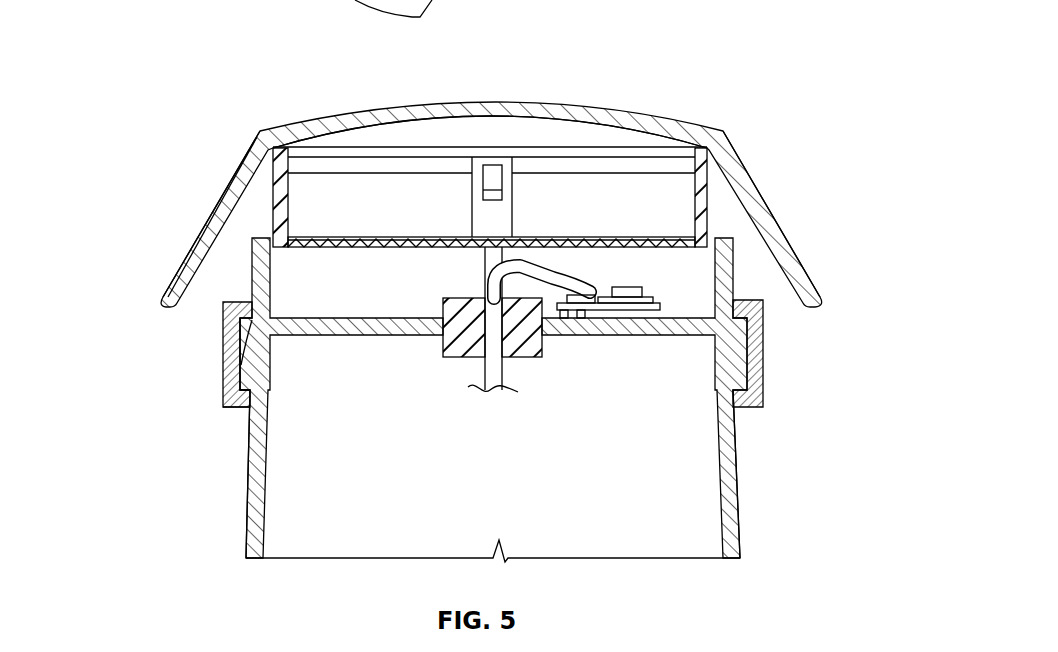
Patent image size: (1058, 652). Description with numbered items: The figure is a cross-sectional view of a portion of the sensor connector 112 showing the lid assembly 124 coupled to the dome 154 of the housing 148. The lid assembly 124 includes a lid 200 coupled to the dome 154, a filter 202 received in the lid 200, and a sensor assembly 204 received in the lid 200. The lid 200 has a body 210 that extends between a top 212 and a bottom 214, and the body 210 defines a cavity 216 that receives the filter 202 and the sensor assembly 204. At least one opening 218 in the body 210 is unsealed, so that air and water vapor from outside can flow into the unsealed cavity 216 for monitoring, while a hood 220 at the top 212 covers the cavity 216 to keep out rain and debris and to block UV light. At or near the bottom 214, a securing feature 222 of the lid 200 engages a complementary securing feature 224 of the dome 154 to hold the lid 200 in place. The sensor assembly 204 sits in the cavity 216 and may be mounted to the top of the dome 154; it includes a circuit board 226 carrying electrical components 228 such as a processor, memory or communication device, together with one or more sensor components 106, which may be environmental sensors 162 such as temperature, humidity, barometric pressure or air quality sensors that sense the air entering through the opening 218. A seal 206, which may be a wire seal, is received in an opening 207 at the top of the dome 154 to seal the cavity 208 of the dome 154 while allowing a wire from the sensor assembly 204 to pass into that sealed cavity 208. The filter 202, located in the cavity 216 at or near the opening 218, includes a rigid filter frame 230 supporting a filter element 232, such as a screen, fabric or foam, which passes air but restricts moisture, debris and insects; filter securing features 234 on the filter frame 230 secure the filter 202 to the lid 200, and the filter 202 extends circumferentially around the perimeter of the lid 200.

The sensor connector 112 is at (127, 180).
The filter 202 is at (272, 160).
The hood 220 is at (204, 237).
The cavity 216 is at (311, 282).
The opening 218 is at (211, 292).
The body 210 is at (228, 341).
The complementary securing feature 224 is at (252, 375).
The bottom 214 is at (234, 405).
The securing feature 222 is at (252, 397).
The housing 148 is at (223, 498).
The opening 207 is at (462, 330).
The seal 206 is at (460, 346).
The filter securing feature 234 is at (490, 168).
The top 212 is at (530, 106).
The filter element 232 is at (591, 186).
The electrical component 228 is at (607, 289).
The lid assembly 124 is at (745, 154).
The filter frame 230 is at (707, 200).
The environmental sensor 162 is at (655, 282).
The sensor component 106 is at (630, 287).
The circuit board 226 is at (660, 308).
The lid 200 is at (757, 347).
The sensor assembly 204 is at (632, 314).
The cavity 208 is at (660, 500).
The dome 154 is at (733, 513).